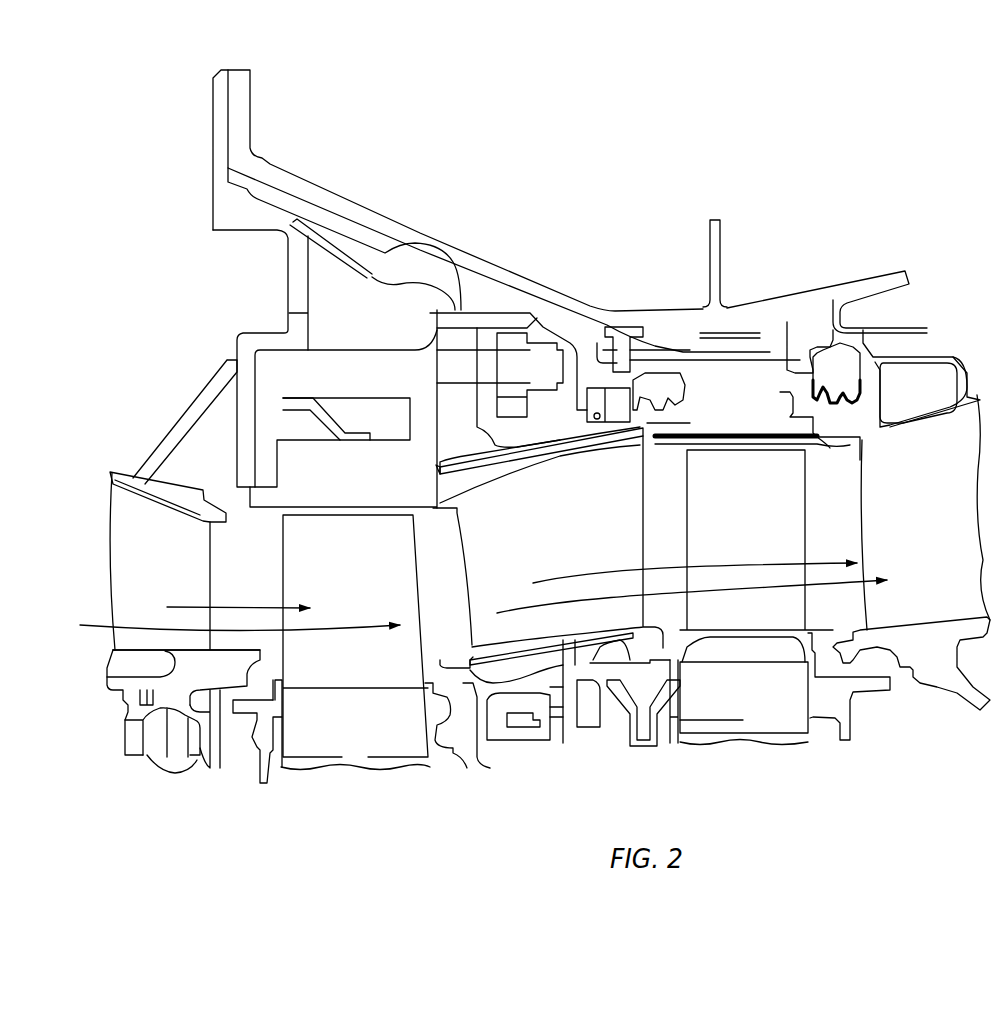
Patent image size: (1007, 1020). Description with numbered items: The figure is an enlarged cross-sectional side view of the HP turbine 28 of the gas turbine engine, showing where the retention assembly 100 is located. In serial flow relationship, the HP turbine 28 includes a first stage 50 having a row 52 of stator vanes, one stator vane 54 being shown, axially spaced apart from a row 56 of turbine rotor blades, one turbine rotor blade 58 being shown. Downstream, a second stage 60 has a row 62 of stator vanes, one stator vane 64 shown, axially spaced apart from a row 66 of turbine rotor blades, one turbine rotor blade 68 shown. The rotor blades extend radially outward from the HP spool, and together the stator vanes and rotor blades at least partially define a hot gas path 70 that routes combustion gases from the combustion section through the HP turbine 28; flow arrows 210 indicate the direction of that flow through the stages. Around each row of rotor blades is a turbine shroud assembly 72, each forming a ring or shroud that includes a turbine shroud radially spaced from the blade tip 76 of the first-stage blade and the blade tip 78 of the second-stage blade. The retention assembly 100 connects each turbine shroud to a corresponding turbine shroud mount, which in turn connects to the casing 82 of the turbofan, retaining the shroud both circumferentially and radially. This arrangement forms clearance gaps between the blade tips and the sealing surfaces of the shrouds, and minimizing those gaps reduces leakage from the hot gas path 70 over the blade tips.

The HP turbine 28 is at (638, 147).
The first stage 50 is at (243, 810).
The row of stator vanes 52 is at (110, 567).
The stator vane 54 is at (153, 587).
The row of turbine rotor blades 56 is at (283, 585).
The turbine rotor blade 58 is at (343, 600).
The second stage 60 is at (580, 782).
The row of stator vanes 62 is at (458, 552).
The stator vane 64 is at (565, 564).
The row of turbine rotor blades 66 is at (805, 548).
The turbine rotor blade 68 is at (760, 561).
The hot gas path 70 is at (100, 627).
The turbine shroud assembly 72 is at (379, 336).
The blade tip 76 is at (339, 517).
The blade tip 78 is at (747, 450).
The casing 82 is at (400, 210).
The retention assembly 100 is at (277, 407).
The cooling air flow 210 is at (197, 607).